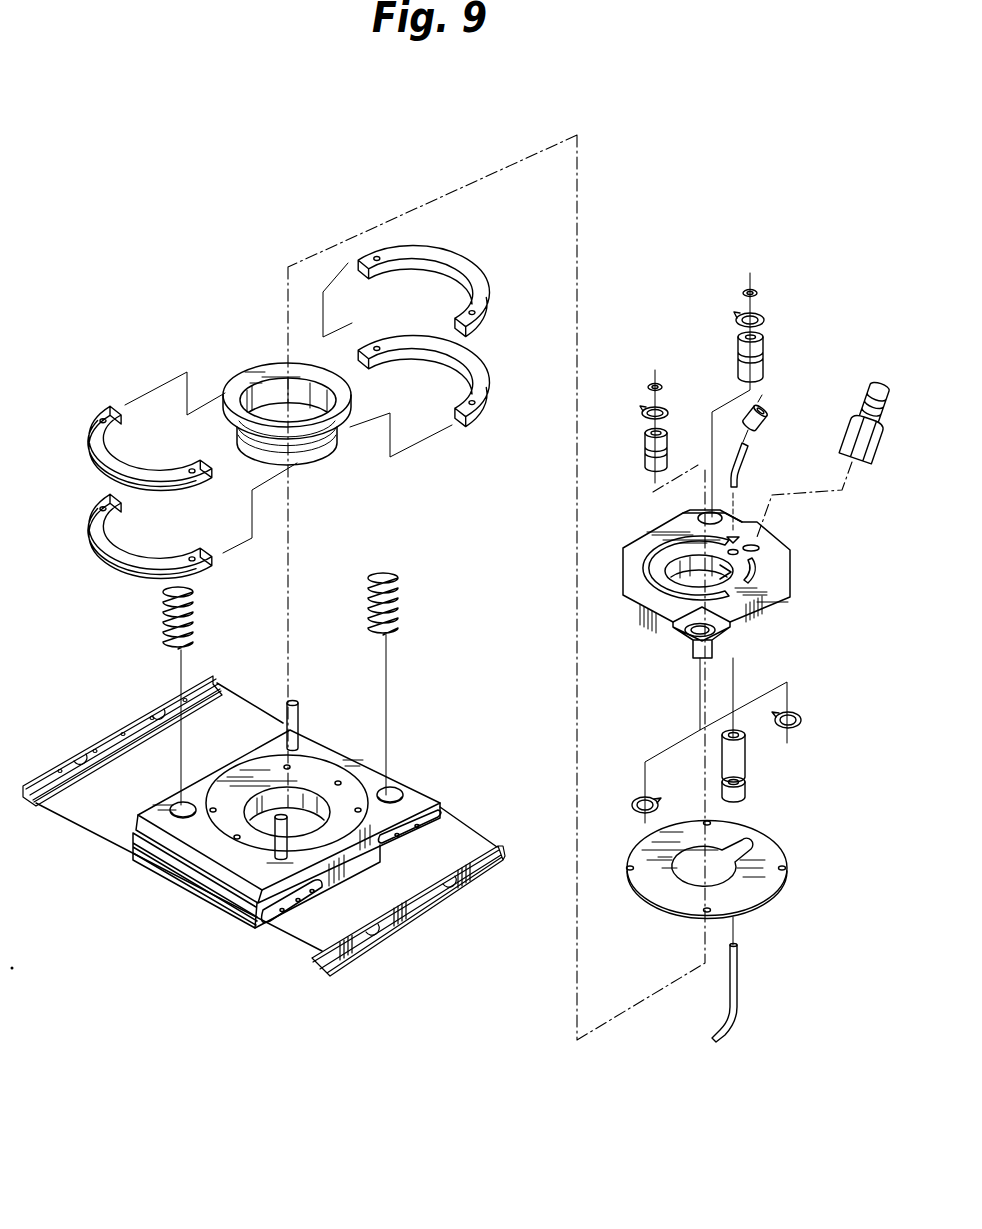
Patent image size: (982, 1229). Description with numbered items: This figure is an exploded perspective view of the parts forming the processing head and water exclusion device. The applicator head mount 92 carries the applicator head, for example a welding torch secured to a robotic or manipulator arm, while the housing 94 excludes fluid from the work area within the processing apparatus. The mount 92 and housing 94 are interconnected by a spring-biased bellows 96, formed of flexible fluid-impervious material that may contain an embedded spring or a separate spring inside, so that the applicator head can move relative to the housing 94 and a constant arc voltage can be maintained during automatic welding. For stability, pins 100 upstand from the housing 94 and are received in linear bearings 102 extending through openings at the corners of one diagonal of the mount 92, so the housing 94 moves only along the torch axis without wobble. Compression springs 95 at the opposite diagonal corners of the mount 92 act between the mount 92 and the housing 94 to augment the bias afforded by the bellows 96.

The applicator head mount 92 is at (780, 612).
The housing 94 is at (187, 851).
The compression springs 95 is at (167, 620).
The spring-biased bellows 96 is at (318, 445).
The pins 100 is at (297, 708).
The linear bearings 102 is at (647, 452).